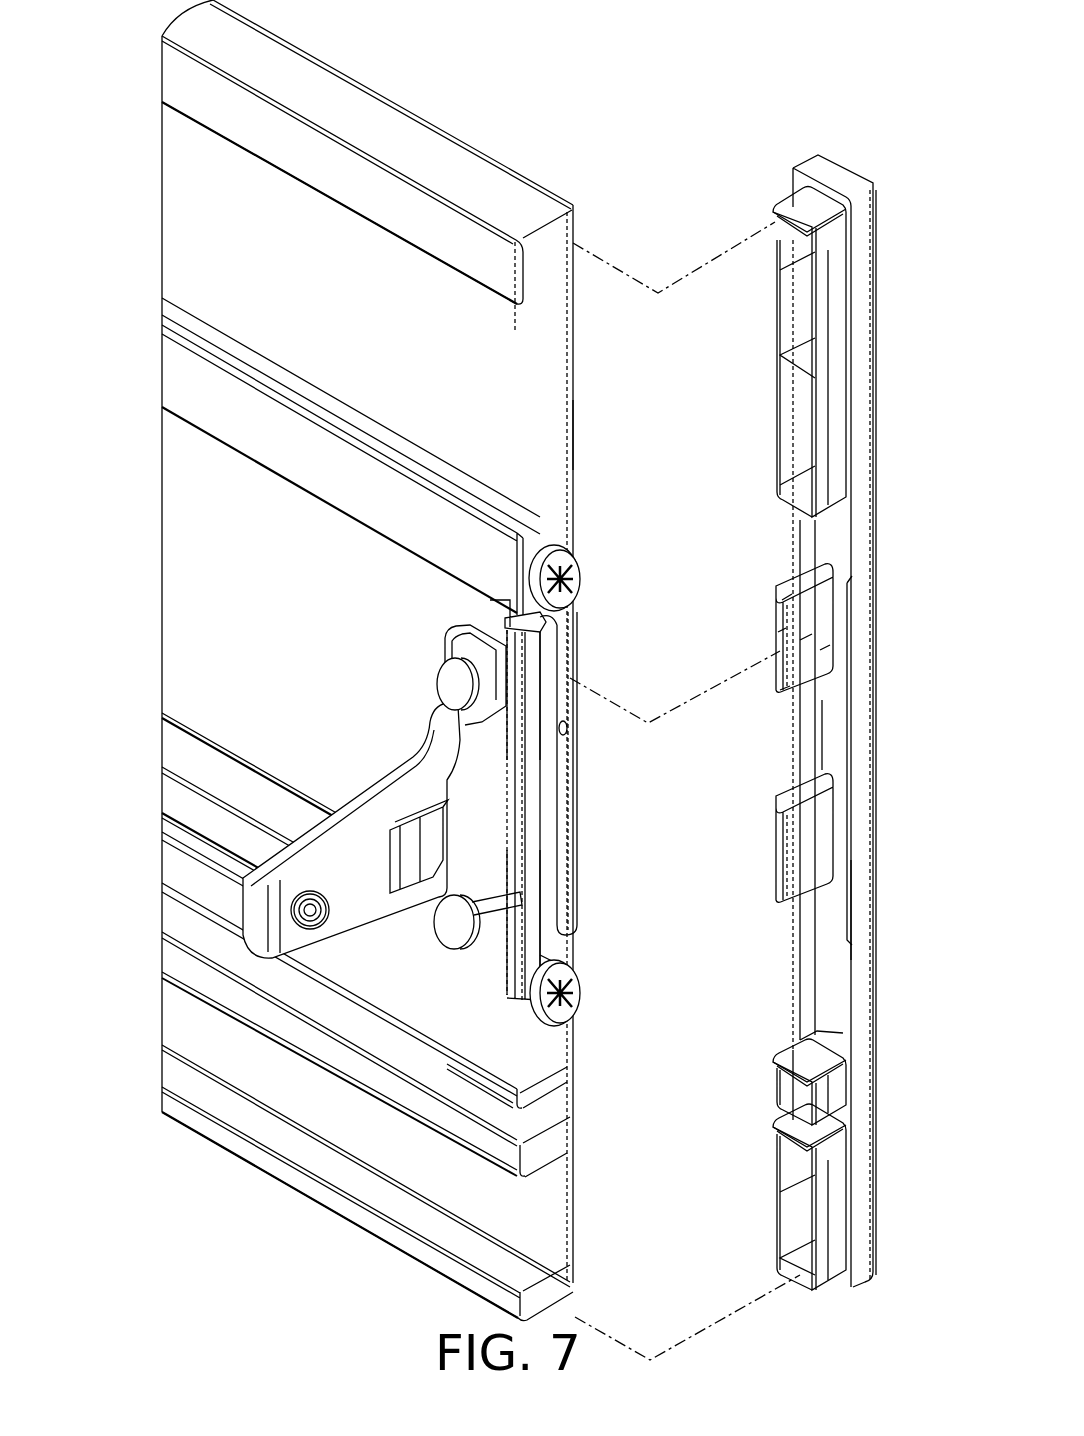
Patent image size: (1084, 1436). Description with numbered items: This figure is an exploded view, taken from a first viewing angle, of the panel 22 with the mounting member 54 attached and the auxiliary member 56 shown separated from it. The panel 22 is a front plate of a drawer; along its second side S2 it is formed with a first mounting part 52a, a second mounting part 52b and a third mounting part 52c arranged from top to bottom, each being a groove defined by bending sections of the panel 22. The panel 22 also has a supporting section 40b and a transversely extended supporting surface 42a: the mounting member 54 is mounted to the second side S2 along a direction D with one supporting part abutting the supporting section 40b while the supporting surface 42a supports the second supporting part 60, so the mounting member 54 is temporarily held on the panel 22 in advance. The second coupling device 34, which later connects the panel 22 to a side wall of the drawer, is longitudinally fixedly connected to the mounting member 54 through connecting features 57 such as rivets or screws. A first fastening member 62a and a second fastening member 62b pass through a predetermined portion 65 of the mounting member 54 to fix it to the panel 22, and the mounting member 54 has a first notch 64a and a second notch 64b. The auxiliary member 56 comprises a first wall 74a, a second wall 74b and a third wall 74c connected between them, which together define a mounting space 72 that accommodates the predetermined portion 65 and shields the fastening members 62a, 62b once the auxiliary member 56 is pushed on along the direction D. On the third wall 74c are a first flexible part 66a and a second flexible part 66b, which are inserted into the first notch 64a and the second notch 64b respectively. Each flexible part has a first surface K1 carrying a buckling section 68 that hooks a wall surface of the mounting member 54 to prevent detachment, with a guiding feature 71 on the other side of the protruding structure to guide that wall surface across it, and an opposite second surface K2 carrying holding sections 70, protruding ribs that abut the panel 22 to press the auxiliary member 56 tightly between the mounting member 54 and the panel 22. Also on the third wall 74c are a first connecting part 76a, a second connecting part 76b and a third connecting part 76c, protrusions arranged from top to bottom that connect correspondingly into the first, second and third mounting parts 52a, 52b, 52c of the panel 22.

The panel 22 is at (198, 537).
The first mounting part 52a is at (547, 279).
The second mounting part 52b is at (545, 1122).
The third mounting part 52c is at (545, 1292).
The second side S2 is at (578, 438).
The supporting section 40b is at (455, 555).
The supporting surface 42a is at (267, 803).
The second coupling device 34 is at (236, 904).
The connecting feature 57 is at (455, 685).
The mounting member 54 is at (576, 937).
The first notch 64a is at (563, 647).
The second notch 64b is at (567, 875).
The second supporting part 60 is at (567, 965).
The predetermined portion 65 is at (548, 783).
The first fastening member 62a is at (578, 565).
The second fastening member 62b is at (584, 1004).
The auxiliary member 56 is at (790, 130).
The first wall 74a is at (808, 927).
The second wall 74b is at (862, 905).
The third wall 74c is at (830, 968).
The buckling section 68 is at (856, 572).
The mounting space 72 is at (827, 730).
The first connecting part 76a is at (838, 373).
The second connecting part 76b is at (836, 1100).
The third connecting part 76c is at (838, 1220).
The first flexible part 66a is at (836, 623).
The second flexible part 66b is at (839, 845).
The holding section 70 is at (782, 592).
The guiding feature 71 is at (808, 636).
The second surface K2 is at (780, 626).
The first surface K1 is at (823, 650).